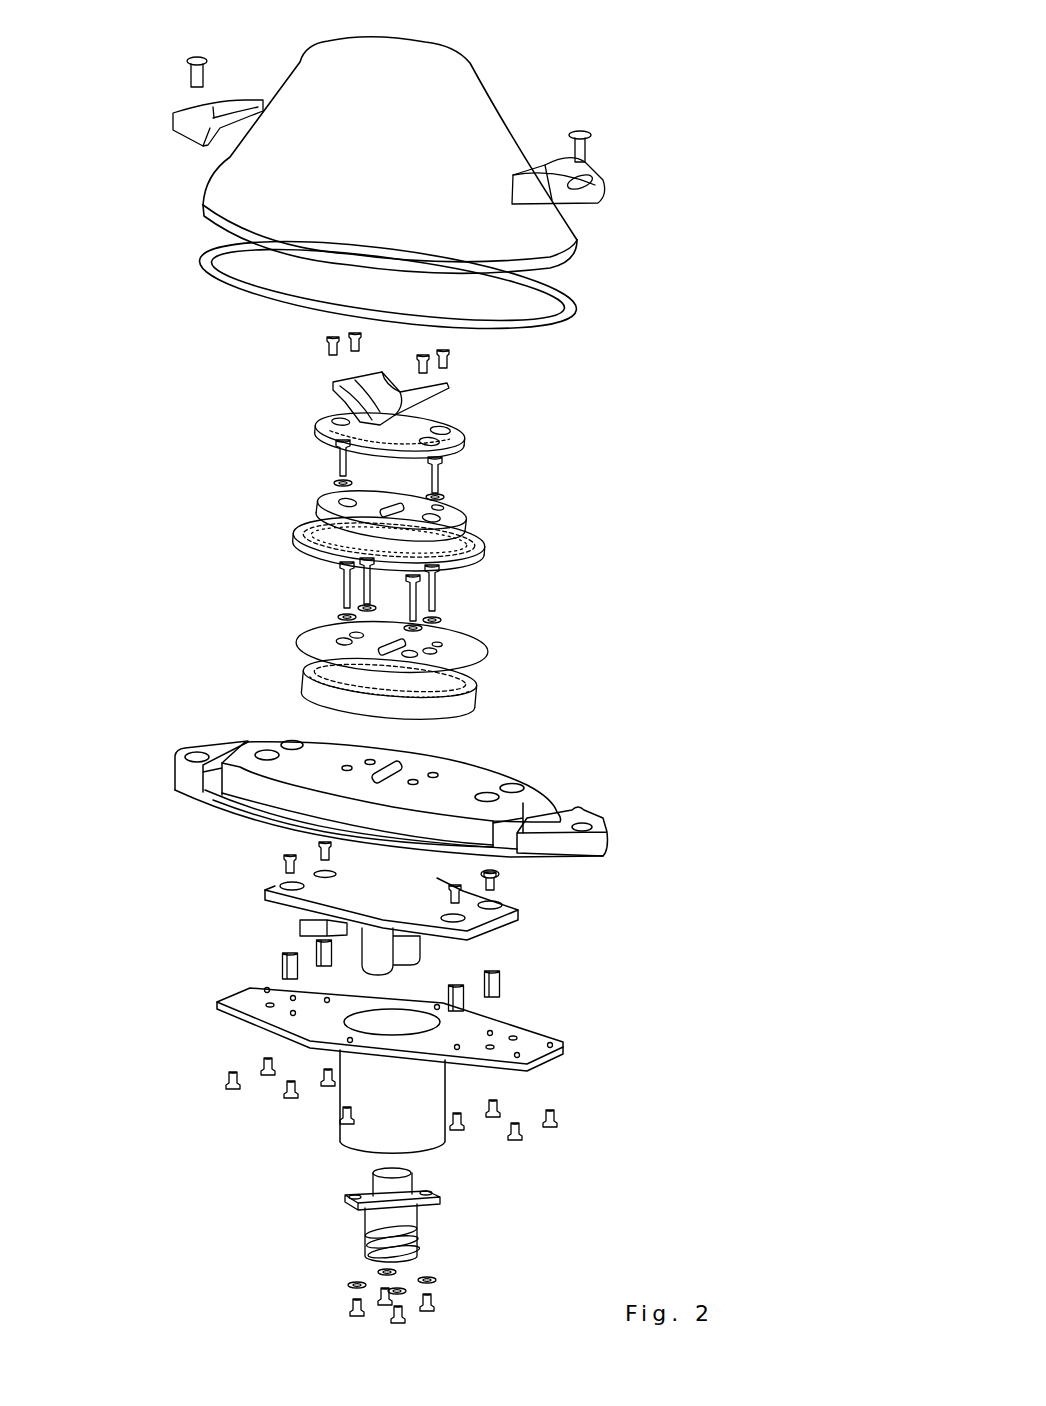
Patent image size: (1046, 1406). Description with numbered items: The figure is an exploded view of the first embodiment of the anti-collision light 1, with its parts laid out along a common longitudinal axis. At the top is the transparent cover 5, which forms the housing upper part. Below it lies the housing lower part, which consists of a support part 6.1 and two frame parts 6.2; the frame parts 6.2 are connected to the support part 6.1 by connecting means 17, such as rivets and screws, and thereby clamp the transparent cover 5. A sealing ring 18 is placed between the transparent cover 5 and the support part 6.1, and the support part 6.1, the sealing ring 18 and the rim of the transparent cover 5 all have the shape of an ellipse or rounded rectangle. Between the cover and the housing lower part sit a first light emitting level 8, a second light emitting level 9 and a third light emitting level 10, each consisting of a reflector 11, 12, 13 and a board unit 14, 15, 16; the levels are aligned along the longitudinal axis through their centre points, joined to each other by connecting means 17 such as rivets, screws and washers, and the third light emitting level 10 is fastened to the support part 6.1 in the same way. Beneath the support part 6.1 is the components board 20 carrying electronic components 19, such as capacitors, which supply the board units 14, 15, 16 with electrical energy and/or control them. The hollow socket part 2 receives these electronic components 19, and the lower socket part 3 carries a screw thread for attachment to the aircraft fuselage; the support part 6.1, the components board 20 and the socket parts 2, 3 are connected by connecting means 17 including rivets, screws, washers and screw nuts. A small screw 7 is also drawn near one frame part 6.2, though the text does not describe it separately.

The anti-collision light 1 is at (648, 86).
The socket part 2 is at (400, 1106).
The lower socket part 3 is at (415, 1226).
The transparent cover 5 is at (393, 155).
The support part 6.1 is at (607, 827).
The frame part 6.2 is at (187, 130).
The screw 7 is at (197, 58).
The first light emitting level 8 is at (441, 414).
The second light emitting level 9 is at (436, 528).
The third light emitting level 10 is at (443, 671).
The reflector 11 is at (333, 388).
The reflector 12 is at (318, 502).
The reflector 13 is at (297, 642).
The board unit 14 is at (315, 430).
The board unit 15 is at (293, 538).
The board unit 16 is at (303, 683).
The connecting means 17 is at (472, 363).
The sealing ring 18 is at (577, 310).
The electronic components 19 is at (420, 950).
The components board 20 is at (518, 910).